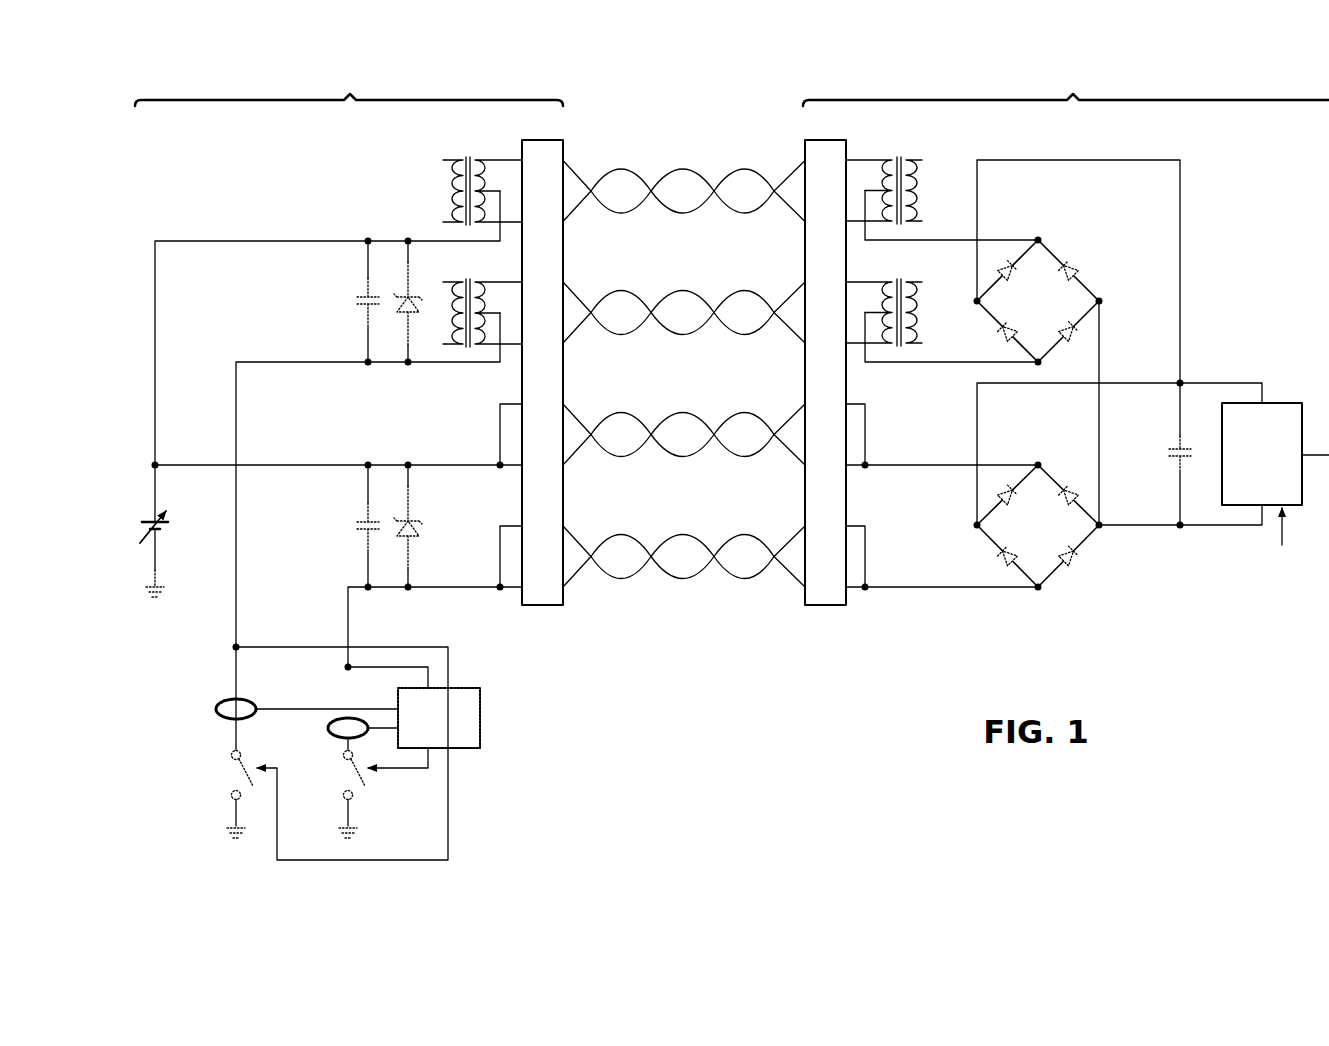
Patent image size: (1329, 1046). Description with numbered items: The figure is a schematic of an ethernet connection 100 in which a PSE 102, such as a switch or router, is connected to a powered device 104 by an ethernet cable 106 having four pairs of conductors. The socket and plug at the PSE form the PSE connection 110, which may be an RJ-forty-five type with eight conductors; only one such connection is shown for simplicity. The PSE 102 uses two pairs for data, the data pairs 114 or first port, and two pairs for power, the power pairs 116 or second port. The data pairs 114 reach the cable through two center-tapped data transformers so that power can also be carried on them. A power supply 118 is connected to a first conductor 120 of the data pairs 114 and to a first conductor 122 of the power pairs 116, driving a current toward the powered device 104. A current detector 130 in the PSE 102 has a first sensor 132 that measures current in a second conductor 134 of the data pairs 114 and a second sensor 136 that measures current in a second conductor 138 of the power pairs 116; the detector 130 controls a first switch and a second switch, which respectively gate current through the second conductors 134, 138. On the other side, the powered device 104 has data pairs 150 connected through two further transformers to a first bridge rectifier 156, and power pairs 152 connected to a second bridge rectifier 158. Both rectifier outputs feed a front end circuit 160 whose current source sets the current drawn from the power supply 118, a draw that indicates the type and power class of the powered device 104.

The ethernet connection 100 is at (516, 75).
The PSE 102 is at (318, 453).
The powered device 104 is at (1066, 358).
The ethernet cable 106 is at (658, 602).
The PSE connection 110 is at (660, 146).
The data pairs 114 is at (422, 179).
The power pairs 116 is at (489, 609).
The power supply 118 is at (140, 525).
The first conductor 120 is at (236, 240).
The first conductor 122 is at (386, 464).
The current detector 130 is at (455, 729).
The first sensor 132 is at (221, 713).
The second conductor 134 is at (240, 555).
The second sensor 136 is at (327, 738).
The second conductor 138 is at (389, 590).
The data pairs 150 is at (940, 177).
The power pairs 152 is at (874, 607).
The first bridge rectifier 156 is at (1092, 249).
The second bridge rectifier 158 is at (1093, 577).
The front end circuit 160 is at (1272, 402).